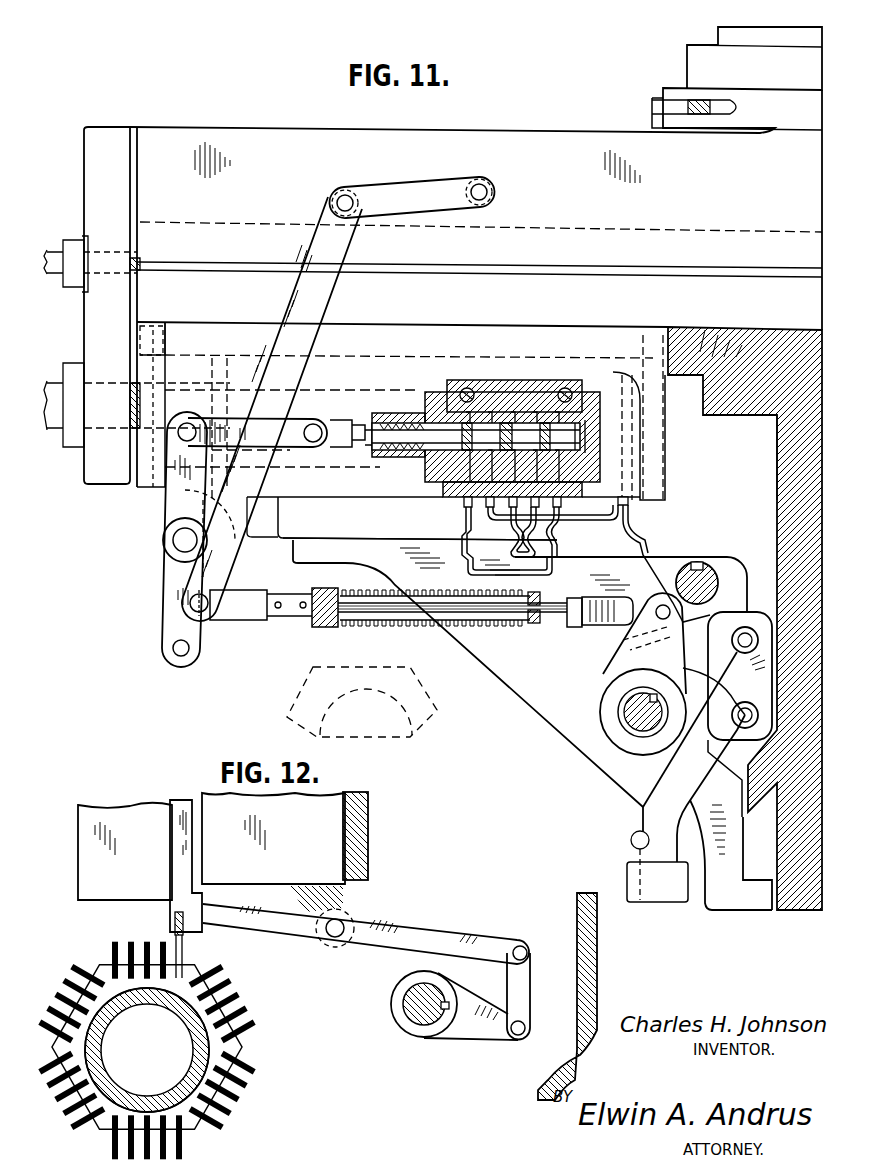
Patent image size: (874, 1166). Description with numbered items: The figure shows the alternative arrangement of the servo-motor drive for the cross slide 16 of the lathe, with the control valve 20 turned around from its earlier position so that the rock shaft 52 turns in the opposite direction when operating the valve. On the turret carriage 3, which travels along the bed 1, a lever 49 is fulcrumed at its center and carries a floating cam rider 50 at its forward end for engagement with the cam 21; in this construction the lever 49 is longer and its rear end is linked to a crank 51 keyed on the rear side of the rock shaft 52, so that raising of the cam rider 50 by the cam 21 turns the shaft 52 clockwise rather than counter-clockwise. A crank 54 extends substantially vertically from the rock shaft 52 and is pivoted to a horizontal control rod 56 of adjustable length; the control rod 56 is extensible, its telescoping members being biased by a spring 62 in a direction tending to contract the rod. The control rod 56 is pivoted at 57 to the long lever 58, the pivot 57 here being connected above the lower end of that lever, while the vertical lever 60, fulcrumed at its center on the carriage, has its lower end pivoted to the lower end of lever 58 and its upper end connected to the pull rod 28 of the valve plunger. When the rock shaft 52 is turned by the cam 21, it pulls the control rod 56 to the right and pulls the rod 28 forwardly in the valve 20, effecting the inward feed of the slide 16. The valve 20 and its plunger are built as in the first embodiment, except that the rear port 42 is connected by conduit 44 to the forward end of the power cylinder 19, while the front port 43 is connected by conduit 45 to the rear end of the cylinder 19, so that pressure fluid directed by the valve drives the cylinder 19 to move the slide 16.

In FIG. 11, the cross slide 16 is at (186, 142).
In FIG. 11, the long lever 58 is at (290, 293).
In FIG. 11, the vertical lever 60 is at (166, 566).
In FIG. 11, the pivot 57 is at (189, 604).
In FIG. 11, the pull rod 28 is at (362, 428).
In FIG. 11, the control valve 20 is at (495, 385).
In FIG. 11, the power cylinder 19 is at (355, 374).
In FIG. 11, the conduit 44 is at (343, 538).
In FIG. 11, the front port 43 is at (458, 504).
In FIG. 11, the rear port 42 is at (548, 505).
In FIG. 11, the conduit 45 is at (633, 530).
In FIG. 11, the spring 62 is at (395, 628).
In FIG. 11, the control rod 56 is at (543, 635).
In FIG. 11, the rock shaft 52 is at (625, 705).
In FIG. 12, the rock shaft 52 is at (412, 1030).
In FIG. 11, the crank 54 is at (683, 628).
In FIG. 11, the bed 1 is at (752, 415).
In FIG. 12, the bed 1 is at (574, 907).
In FIG. 12, the turret carriage 3 is at (370, 835).
In FIG. 12, the floating cam rider 50 is at (170, 910).
In FIG. 12, the cam 21 is at (89, 956).
In FIG. 12, the lever 49 is at (428, 922).
In FIG. 12, the crank 51 is at (487, 1045).